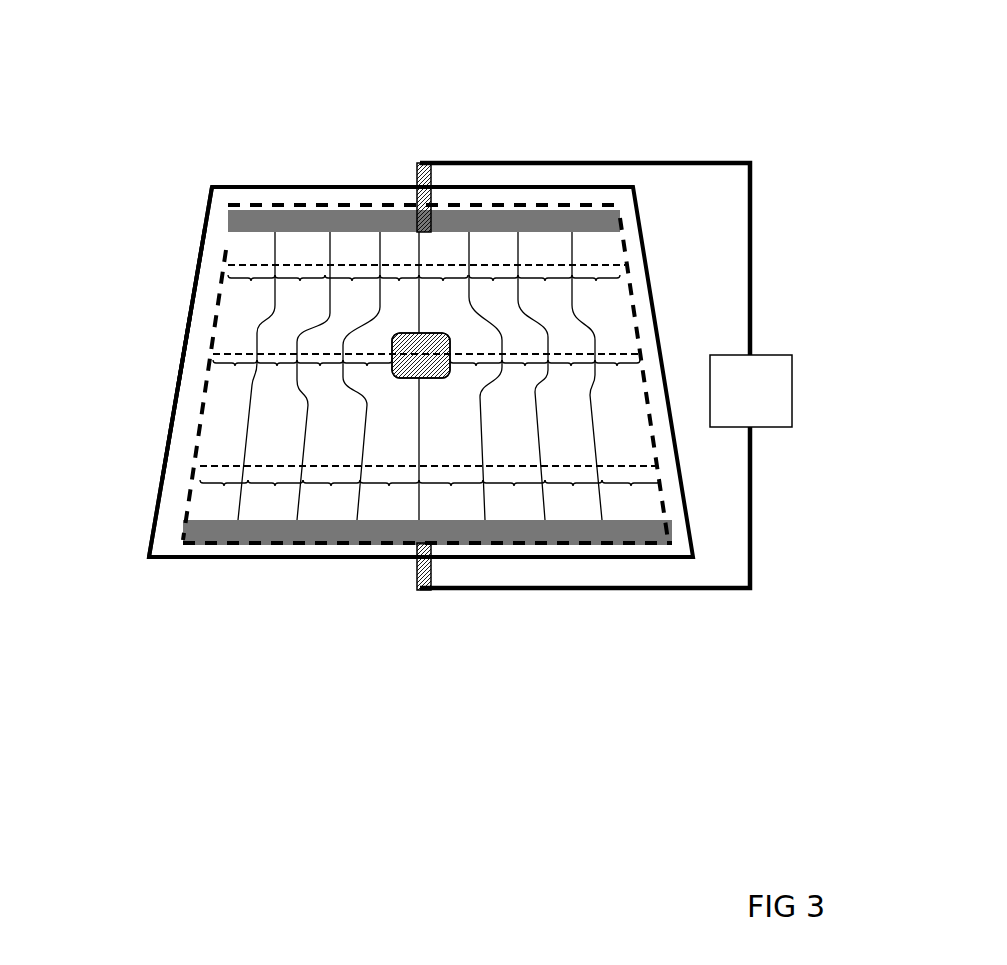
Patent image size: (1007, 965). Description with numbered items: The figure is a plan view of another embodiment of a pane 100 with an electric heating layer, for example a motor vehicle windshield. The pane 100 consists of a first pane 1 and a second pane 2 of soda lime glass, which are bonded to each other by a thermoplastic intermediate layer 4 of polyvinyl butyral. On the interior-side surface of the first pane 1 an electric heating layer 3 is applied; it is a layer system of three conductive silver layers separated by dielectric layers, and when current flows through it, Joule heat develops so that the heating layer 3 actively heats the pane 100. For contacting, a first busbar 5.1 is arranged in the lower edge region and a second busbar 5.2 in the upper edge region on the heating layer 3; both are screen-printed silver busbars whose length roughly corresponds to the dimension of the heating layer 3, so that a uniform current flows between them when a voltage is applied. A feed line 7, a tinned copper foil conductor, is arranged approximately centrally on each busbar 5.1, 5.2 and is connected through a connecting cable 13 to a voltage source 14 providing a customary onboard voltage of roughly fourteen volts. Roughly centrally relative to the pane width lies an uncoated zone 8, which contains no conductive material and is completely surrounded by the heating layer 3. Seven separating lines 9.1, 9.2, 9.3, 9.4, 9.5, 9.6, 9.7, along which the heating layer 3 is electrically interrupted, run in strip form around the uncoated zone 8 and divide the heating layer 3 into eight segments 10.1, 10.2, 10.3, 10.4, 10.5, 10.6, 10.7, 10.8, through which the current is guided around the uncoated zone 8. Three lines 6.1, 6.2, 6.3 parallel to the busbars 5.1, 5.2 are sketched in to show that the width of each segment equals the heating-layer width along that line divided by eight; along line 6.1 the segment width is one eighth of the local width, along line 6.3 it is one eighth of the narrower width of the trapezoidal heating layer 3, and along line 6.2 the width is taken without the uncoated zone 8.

The pane 100 is at (185, 75).
The first pane 1 is at (198, 281).
The second pane 2 is at (191, 315).
The electric heating layer 3 is at (200, 430).
The thermoplastic intermediate layer 4 is at (186, 352).
The first busbar 5.1 is at (173, 528).
The second busbar 5.2 is at (232, 207).
The line 6.1 is at (200, 467).
The line 6.2 is at (213, 355).
The line 6.3 is at (228, 266).
The feed line 7 is at (421, 163).
The uncoated zone 8 is at (445, 350).
The separating line 9.1 is at (419, 505).
The separating line 9.2 is at (362, 505).
The separating line 9.3 is at (306, 505).
The separating line 9.4 is at (246, 505).
The separating line 9.5 is at (483, 505).
The separating line 9.6 is at (545, 505).
The separating line 9.7 is at (602, 505).
The segment 10.1 is at (394, 247).
The segment 10.2 is at (348, 248).
The segment 10.3 is at (303, 243).
The segment 10.4 is at (247, 248).
The segment 10.5 is at (442, 248).
The segment 10.6 is at (492, 248).
The segment 10.7 is at (538, 248).
The segment 10.8 is at (603, 247).
The connecting cable 13 is at (750, 182).
The voltage source 14 is at (792, 393).